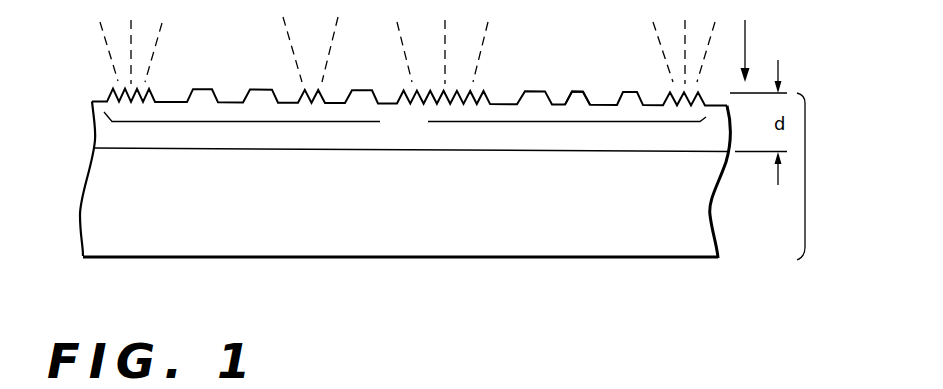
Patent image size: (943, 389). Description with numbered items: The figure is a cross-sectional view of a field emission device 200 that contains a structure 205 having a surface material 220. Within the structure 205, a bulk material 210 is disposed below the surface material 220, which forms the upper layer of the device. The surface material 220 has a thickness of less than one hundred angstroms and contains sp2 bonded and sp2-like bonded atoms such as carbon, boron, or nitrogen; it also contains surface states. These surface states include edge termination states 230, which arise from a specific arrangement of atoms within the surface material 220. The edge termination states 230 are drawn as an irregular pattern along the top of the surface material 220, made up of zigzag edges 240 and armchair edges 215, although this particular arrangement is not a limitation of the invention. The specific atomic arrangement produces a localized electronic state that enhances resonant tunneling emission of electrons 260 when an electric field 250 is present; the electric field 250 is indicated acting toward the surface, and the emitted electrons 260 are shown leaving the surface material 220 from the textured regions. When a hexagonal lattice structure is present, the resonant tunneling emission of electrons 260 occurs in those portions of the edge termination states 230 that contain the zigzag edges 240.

The field emission device 200 is at (401, 179).
The structure 205 is at (826, 176).
The bulk material 210 is at (690, 236).
The armchair edges 215 is at (572, 90).
The surface material 220 is at (105, 132).
The edge termination states 230 is at (405, 123).
The zigzag edges 240 is at (108, 92).
The electric field 250 is at (747, 43).
The electrons 260 is at (157, 43).